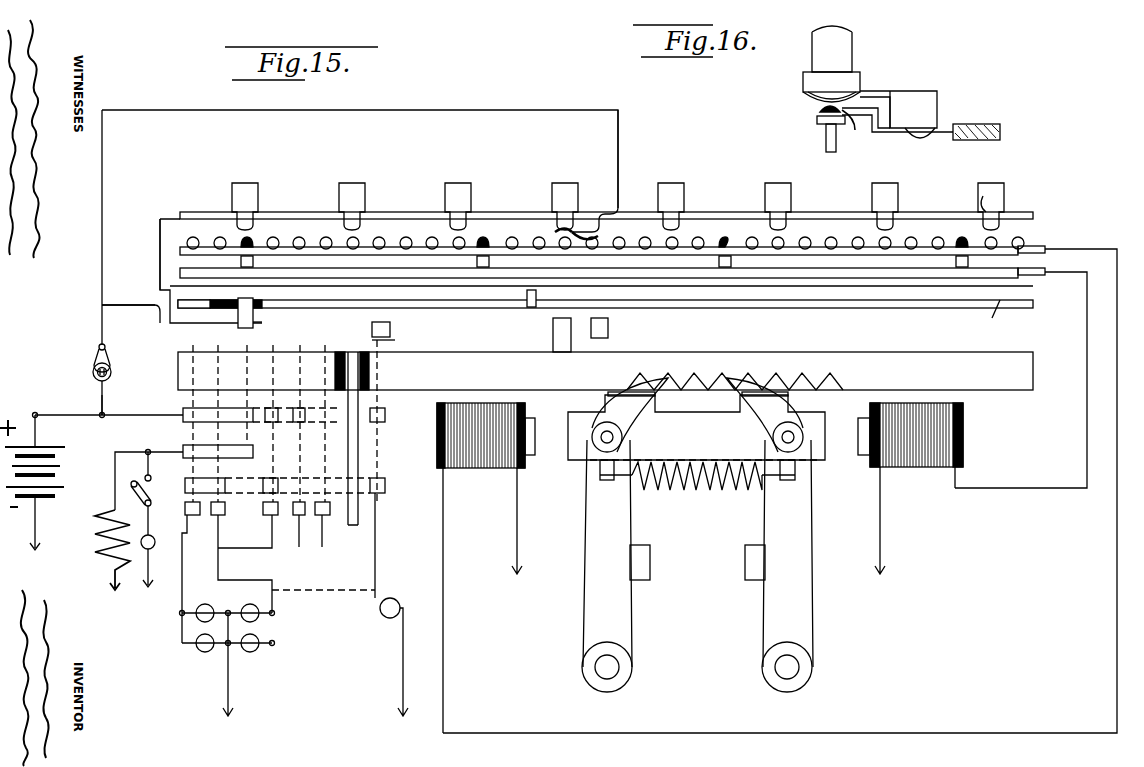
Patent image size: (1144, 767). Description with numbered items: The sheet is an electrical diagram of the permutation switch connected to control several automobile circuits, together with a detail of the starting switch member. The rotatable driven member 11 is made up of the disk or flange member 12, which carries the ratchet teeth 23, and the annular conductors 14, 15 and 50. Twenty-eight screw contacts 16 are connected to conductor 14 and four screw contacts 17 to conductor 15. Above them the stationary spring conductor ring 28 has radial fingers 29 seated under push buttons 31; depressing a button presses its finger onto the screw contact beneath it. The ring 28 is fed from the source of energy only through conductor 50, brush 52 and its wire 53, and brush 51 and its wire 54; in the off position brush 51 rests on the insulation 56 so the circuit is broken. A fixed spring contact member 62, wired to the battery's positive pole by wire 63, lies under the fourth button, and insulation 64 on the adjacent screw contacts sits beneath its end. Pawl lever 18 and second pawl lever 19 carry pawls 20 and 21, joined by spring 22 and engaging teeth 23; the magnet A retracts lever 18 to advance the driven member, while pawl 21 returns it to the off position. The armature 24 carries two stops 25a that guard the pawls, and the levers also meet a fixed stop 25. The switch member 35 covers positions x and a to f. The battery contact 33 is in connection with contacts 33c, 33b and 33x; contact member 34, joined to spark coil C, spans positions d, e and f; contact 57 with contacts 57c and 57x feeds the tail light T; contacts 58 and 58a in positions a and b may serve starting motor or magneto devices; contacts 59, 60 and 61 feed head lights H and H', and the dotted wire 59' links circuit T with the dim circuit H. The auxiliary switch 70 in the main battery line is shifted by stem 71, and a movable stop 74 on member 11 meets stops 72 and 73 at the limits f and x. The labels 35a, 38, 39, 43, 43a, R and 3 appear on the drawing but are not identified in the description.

In FIG. 15, the driven member 11 is at (619, 307).
In FIG. 15, the annular flange member 12 is at (1033, 362).
In FIG. 15, the annular conductor 14 is at (1000, 240).
In FIG. 15, the annular conductor 15 is at (1015, 280).
In FIG. 15, the screw contacts 16 is at (905, 229).
In FIG. 16, the screw contacts 16 is at (818, 114).
In FIG. 15, the screw contacts 17 is at (968, 228).
In FIG. 15, the pawl lever 18 is at (787, 566).
In FIG. 15, the second pawl lever 19 is at (607, 566).
In FIG. 15, the pawl 20 is at (762, 415).
In FIG. 15, the pawl 21 is at (636, 415).
In FIG. 15, the spring 22 is at (705, 490).
In FIG. 15, the ratchet teeth 23 is at (700, 376).
In FIG. 15, the armature 24 is at (823, 404).
In FIG. 15, the fixed stop 25 is at (740, 545).
In FIG. 15, the stops 25a is at (770, 378).
In FIG. 15, the conductor ring 28 is at (1033, 213).
In FIG. 16, the conductor ring 28 is at (910, 91).
In FIG. 15, the spring contact fingers 29 is at (965, 200).
In FIG. 16, the spring contact fingers 29 is at (805, 95).
In FIG. 15, the push buttons 31 is at (920, 185).
In FIG. 16, the push buttons 31 is at (843, 42).
In FIG. 15, the contact 33 is at (183, 415).
In FIG. 15, the contact 33b is at (309, 425).
In FIG. 15, the contact 33c is at (264, 425).
In FIG. 15, the contact 33x is at (378, 422).
In FIG. 15, the contact member 34 is at (183, 452).
In FIG. 15, the switch member 35 is at (353, 525).
In FIG. 15, the wire 35a is at (98, 403).
In FIG. 15, the terminal 38 is at (1040, 246).
In FIG. 15, the terminal 39 is at (1053, 266).
In FIG. 15, the switch contact 43 is at (154, 538).
In FIG. 15, the switch lever 43a is at (146, 478).
In FIG. 15, the annular conductor member 50 is at (1004, 318).
In FIG. 15, the brush 51 is at (262, 322).
In FIG. 15, the brush 52 is at (536, 296).
In FIG. 15, the wire 53 is at (140, 305).
In FIG. 15, the wire 54 is at (160, 245).
In FIG. 15, the insulation 56 is at (253, 300).
In FIG. 15, the contact 57 is at (185, 485).
In FIG. 15, the contact 57c is at (270, 478).
In FIG. 15, the contact 57x is at (385, 485).
In FIG. 15, the contact 58 is at (303, 515).
In FIG. 15, the contact 58a is at (326, 515).
In FIG. 15, the contact 59 is at (278, 537).
In FIG. 15, the wire 59' is at (323, 604).
In FIG. 15, the contact 60 is at (222, 515).
In FIG. 15, the contact 61 is at (195, 515).
In FIG. 15, the spring contact member 62 is at (588, 236).
In FIG. 16, the spring contact member 62 is at (888, 132).
In FIG. 15, the wire 63 is at (618, 165).
In FIG. 16, the wire 63 is at (945, 133).
In FIG. 15, the insulation 64 is at (560, 230).
In FIG. 16, the insulation 64 is at (853, 128).
In FIG. 15, the auxiliary switch 70 is at (108, 352).
In FIG. 15, the stem 71 is at (111, 372).
In FIG. 15, the stop 72 is at (390, 330).
In FIG. 15, the stop 73 is at (608, 328).
In FIG. 15, the movable stop 74 is at (553, 325).
In FIG. 15, the magnet A is at (910, 488).
In FIG. 15, the magnet coil R is at (486, 568).
In FIG. 15, the spark coil C is at (96, 550).
In FIG. 15, the head lights H is at (241, 660).
In FIG. 15, the head lights H' is at (227, 641).
In FIG. 15, the tail light T is at (394, 598).
In FIG. 15, the position x is at (389, 342).
In FIG. 15, the position a is at (323, 415).
In FIG. 15, the position b is at (299, 415).
In FIG. 15, the position c is at (272, 415).
In FIG. 15, the position d is at (246, 384).
In FIG. 15, the position e is at (217, 415).
In FIG. 15, the position f is at (192, 415).
In FIG. 15, the circuit wire 3 is at (350, 342).